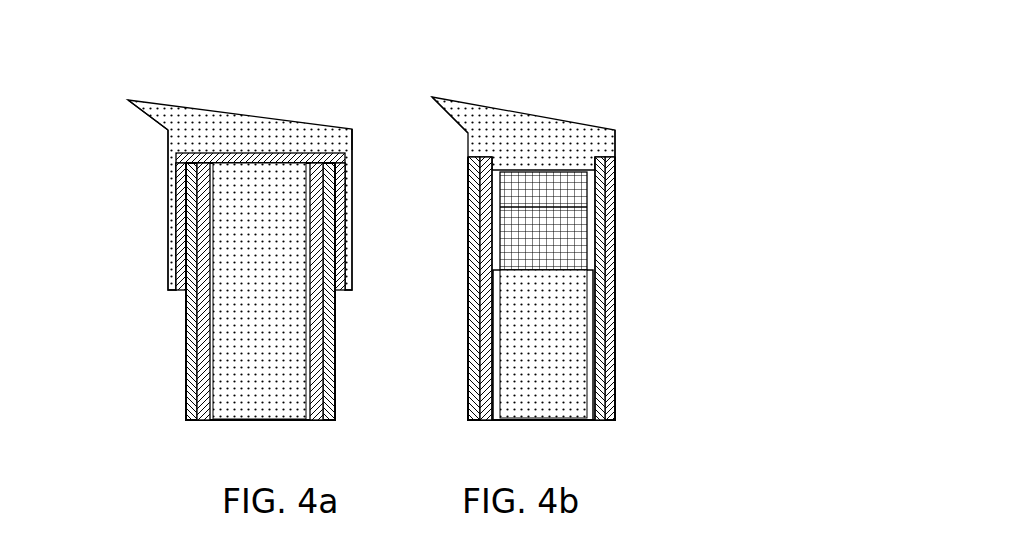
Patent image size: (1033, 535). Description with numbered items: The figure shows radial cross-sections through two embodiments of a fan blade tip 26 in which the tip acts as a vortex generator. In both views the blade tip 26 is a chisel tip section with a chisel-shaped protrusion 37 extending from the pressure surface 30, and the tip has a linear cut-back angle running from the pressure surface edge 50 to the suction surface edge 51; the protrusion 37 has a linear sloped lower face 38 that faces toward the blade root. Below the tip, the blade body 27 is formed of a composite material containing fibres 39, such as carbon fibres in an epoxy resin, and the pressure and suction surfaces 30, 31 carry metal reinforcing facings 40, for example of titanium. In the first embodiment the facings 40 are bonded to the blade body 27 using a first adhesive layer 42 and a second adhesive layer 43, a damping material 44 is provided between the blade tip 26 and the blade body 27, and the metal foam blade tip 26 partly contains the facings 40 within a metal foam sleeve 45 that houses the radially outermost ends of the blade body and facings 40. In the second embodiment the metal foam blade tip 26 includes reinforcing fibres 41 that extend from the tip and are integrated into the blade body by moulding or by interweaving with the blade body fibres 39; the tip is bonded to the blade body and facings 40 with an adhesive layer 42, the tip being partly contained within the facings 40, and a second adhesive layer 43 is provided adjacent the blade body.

In FIG. 4a, the blade tip 26 is at (187, 167).
In FIG. 4b, the blade tip 26 is at (575, 99).
In FIG. 4a, the blade body 27 is at (265, 392).
In FIG. 4b, the blade body 27 is at (573, 387).
In FIG. 4a, the pressure surface 30 is at (238, 328).
In FIG. 4b, the pressure surface 30 is at (569, 298).
In FIG. 4a, the suction surface 31 is at (354, 312).
In FIG. 4b, the suction surface 31 is at (650, 339).
In FIG. 4a, the chisel-shaped protrusion 37 is at (199, 167).
In FIG. 4b, the chisel-shaped protrusion 37 is at (575, 110).
In FIG. 4a, the lower face of chisel-shaped protrusion 38 is at (164, 128).
In FIG. 4b, the lower face of chisel-shaped protrusion 38 is at (458, 122).
In FIG. 4a, the fibres 39 is at (238, 299).
In FIG. 4b, the fibres 39 is at (575, 300).
In FIG. 4a, the reinforcing facings 40 is at (185, 393).
In FIG. 4b, the reinforcing facings 40 is at (470, 292).
In FIG. 4b, the reinforcing fibres 41 is at (615, 202).
In FIG. 4b, the first adhesive layer 42 is at (607, 317).
In FIG. 4b, the second adhesive layer 43 is at (470, 387).
In FIG. 4a, the damping material 44 is at (237, 158).
In FIG. 4a, the metal foam sleeve 45 is at (167, 225).
In FIG. 4a, the pressure surface edge 50 is at (128, 100).
In FIG. 4b, the pressure surface edge 50 is at (432, 97).
In FIG. 4a, the suction surface edge 51 is at (352, 128).
In FIG. 4b, the suction surface edge 51 is at (617, 132).